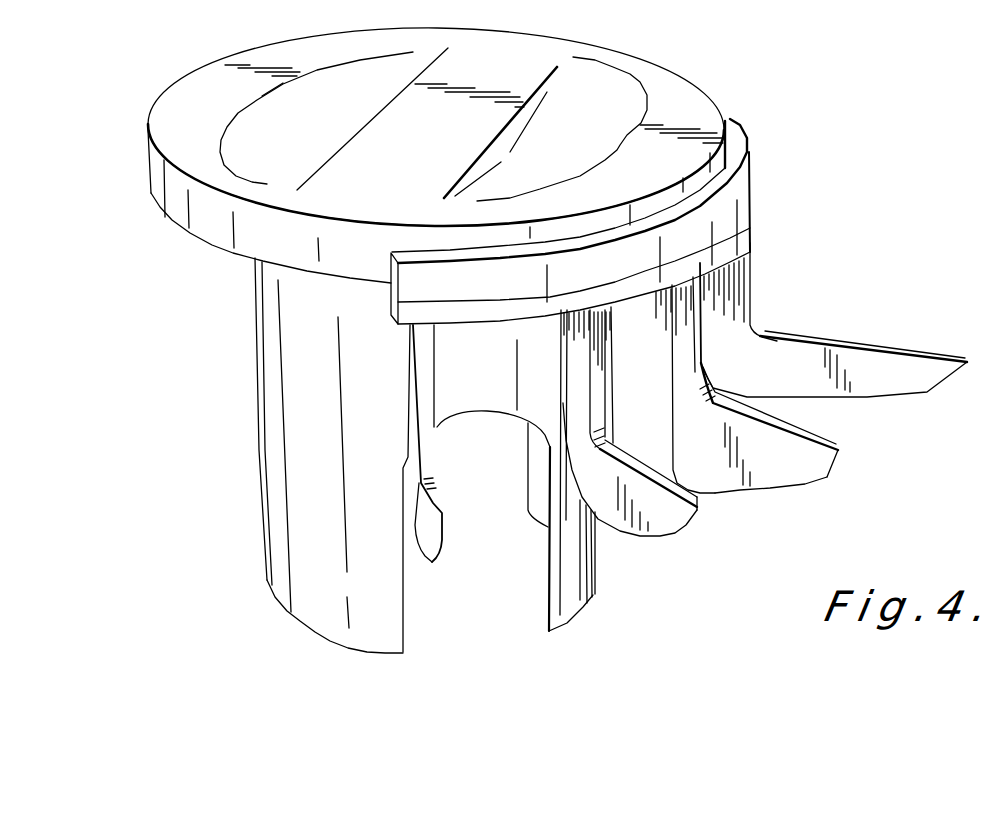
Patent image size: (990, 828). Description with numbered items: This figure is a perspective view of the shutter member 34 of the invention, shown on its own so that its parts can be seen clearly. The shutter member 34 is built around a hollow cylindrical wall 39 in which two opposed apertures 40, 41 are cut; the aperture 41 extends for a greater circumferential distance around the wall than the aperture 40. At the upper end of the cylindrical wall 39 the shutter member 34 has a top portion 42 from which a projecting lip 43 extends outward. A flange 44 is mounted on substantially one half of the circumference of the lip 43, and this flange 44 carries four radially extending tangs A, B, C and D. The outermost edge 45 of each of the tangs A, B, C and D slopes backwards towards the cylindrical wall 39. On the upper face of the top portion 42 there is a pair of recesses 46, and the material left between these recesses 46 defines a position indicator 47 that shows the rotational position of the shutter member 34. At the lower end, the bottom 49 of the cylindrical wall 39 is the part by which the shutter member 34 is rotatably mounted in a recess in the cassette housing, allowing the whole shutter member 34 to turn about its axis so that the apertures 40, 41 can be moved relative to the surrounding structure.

The shutter member 34 is at (212, 604).
The hollow cylindrical wall 39 is at (302, 397).
The aperture 40 is at (505, 623).
The aperture 41 is at (459, 481).
The top portion 42 is at (533, 50).
The projecting lip 43 is at (213, 232).
The flange 44 is at (627, 221).
The outermost edge 45 is at (442, 527).
The recesses 46 is at (328, 100).
The position indicator 47 is at (406, 141).
The bottom 49 is at (337, 627).
The tang A is at (433, 550).
The tang B is at (660, 517).
The tang C is at (773, 470).
The tang D is at (893, 363).